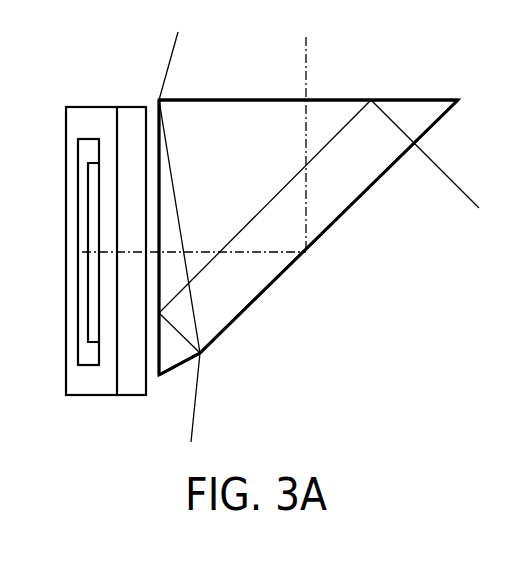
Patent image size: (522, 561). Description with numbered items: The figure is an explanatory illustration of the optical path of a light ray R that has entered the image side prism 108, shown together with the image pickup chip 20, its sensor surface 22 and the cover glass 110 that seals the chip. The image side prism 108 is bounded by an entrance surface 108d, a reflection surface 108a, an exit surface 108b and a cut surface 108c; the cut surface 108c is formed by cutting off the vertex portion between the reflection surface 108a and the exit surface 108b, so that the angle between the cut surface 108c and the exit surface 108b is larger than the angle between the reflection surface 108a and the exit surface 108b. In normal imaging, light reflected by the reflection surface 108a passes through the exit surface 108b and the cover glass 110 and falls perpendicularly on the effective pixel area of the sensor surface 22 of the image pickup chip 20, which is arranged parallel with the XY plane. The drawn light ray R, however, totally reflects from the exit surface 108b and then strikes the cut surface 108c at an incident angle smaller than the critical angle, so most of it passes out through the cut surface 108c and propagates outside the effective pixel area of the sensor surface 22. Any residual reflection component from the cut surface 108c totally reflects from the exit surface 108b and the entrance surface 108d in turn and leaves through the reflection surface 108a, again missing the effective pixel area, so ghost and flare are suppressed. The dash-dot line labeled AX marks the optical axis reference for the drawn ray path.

The image pickup chip 20 is at (85, 352).
The sensor surface 22 is at (100, 213).
The cover glass 110 is at (135, 378).
The image side prism 108 is at (232, 118).
The reflection surface 108a is at (348, 210).
The exit surface 108b is at (157, 160).
The cut surface 108c is at (173, 373).
The entrance surface 108d is at (417, 100).
The light ray R is at (171, 49).
The optical axis AX is at (306, 55).